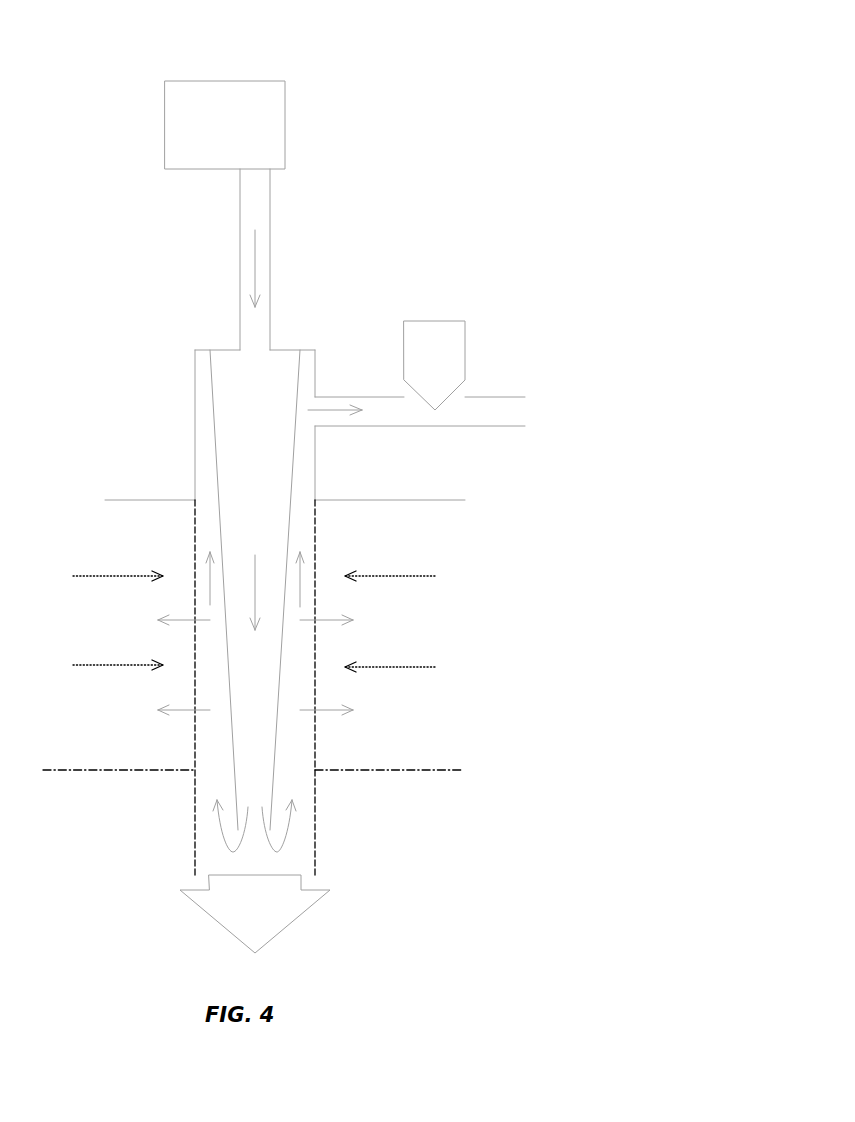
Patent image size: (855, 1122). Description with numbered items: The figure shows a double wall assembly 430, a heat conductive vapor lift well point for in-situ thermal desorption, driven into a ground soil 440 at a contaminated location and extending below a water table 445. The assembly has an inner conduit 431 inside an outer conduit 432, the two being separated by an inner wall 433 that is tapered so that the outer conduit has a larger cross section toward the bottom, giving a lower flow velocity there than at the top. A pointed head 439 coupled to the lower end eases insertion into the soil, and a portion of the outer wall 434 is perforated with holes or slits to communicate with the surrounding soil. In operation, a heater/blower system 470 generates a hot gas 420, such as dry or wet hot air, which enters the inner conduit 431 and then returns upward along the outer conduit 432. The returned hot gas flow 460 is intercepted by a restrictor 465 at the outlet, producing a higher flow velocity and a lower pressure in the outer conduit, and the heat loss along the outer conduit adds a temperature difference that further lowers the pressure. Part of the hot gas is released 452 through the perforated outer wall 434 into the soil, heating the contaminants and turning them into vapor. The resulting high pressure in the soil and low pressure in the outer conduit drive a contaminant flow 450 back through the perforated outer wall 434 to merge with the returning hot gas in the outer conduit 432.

The heater/blower system 470 is at (240, 97).
The hot gas 420 is at (255, 267).
The returned hot gas flow 460 is at (337, 410).
The restrictor 465 is at (474, 298).
The ground soil 440 is at (148, 500).
The inner conduit 431 is at (272, 457).
The contaminant flow 450 is at (118, 577).
The outer conduit 432 is at (215, 732).
The inner wall 433 is at (280, 685).
The release of hot gas 452 is at (337, 715).
The double wall assembly 430 is at (154, 806).
The water table 445 is at (428, 772).
The outer wall 434 is at (193, 838).
The pointed head 439 is at (268, 915).